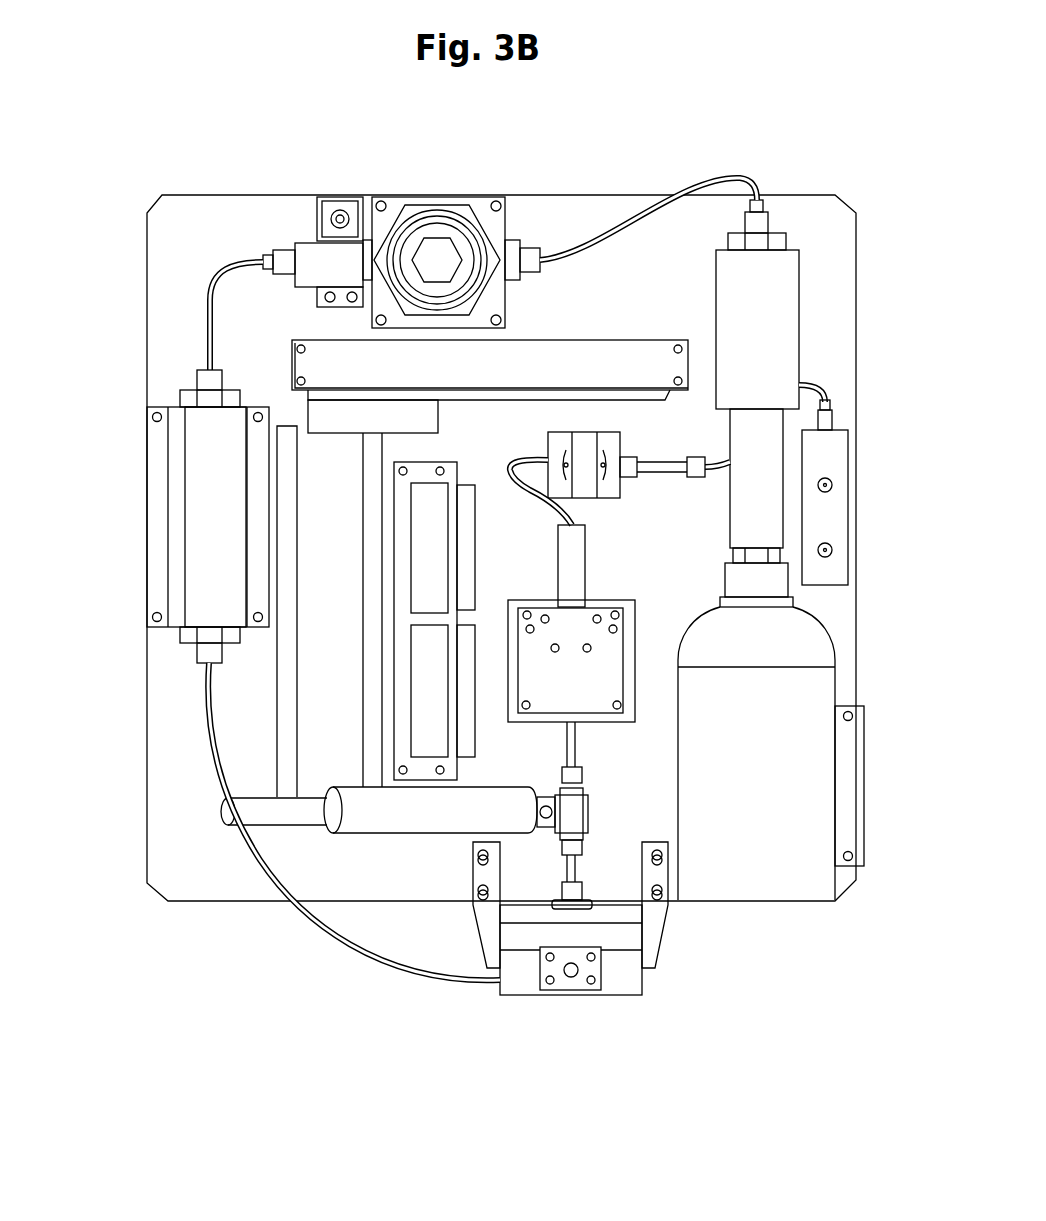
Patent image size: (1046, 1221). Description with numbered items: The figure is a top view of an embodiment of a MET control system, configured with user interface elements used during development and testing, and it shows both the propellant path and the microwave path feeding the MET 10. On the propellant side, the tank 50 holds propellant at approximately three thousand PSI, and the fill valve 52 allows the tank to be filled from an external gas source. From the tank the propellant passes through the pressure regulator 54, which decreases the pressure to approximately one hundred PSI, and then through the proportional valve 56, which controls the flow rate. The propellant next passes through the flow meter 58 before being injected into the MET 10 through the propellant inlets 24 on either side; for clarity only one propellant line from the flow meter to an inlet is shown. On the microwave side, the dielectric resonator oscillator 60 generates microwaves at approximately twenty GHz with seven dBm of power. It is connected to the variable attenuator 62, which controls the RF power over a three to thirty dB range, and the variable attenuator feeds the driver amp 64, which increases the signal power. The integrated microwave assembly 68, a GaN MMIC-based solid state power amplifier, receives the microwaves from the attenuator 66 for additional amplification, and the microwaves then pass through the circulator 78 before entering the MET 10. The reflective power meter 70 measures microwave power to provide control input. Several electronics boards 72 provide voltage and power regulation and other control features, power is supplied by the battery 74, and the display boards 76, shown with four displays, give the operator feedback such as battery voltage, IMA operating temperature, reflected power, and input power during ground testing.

The MET 10 is at (521, 990).
The propellant inlets 24 is at (497, 985).
The tank 50 is at (807, 883).
The fill valve 52 is at (787, 267).
The pressure regulator 54 is at (420, 228).
The proportional valve 56 is at (338, 258).
The flow meter 58 is at (185, 500).
The dielectric resonator oscillator 60 is at (840, 587).
The variable attenuator 62 is at (659, 460).
The driver amp 64 is at (602, 500).
The attenuator 66 is at (578, 558).
The integrated microwave assembly 68 is at (612, 697).
The reflective power meter 70 is at (385, 825).
The electronics boards 72 is at (588, 355).
The battery 74 is at (308, 715).
The display boards 76 is at (423, 590).
The circulator 78 is at (583, 810).